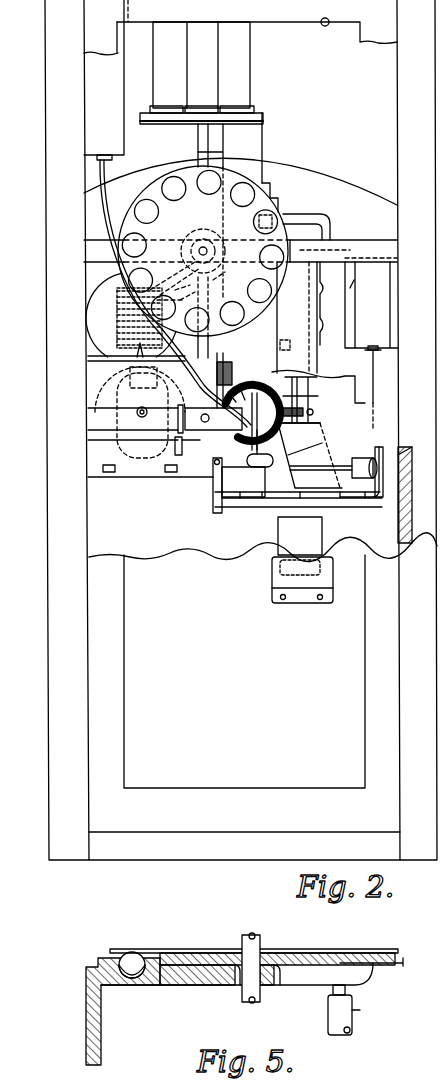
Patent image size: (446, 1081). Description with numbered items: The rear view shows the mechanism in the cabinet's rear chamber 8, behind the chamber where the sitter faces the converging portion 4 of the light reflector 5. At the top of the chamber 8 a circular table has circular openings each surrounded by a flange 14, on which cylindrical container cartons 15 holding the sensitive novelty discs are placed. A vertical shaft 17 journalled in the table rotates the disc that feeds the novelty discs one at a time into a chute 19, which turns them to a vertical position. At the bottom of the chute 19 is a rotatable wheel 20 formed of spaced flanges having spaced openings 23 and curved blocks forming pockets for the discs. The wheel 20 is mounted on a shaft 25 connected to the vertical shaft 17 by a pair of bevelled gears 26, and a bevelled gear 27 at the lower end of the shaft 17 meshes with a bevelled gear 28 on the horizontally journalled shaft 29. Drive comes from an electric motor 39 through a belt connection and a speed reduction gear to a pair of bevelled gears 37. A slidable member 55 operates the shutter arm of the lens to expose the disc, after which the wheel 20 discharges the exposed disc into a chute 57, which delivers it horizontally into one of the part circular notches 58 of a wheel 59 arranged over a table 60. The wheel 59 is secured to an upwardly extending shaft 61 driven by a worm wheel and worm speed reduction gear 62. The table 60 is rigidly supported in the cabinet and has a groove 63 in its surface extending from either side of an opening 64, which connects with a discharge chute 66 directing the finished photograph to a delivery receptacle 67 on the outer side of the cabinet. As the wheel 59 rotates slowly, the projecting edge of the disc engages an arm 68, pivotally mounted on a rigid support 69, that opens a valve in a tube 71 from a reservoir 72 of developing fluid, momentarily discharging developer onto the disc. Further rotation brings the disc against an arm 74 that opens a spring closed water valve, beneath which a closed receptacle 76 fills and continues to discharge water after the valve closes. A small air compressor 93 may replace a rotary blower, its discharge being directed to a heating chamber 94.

In FIG. 2, the converging portion 4 is at (353, 178).
In FIG. 2, the light reflector 5 is at (345, 107).
In FIG. 2, the chamber 8 is at (329, 21).
In FIG. 2, the flange 14 is at (237, 106).
In FIG. 2, the container cartons 15 is at (240, 60).
In FIG. 2, the vertical shaft 17 is at (203, 135).
In FIG. 2, the chute 19 is at (257, 145).
In FIG. 2, the rotatable wheel 20 is at (163, 187).
In FIG. 2, the spaced openings 23 is at (140, 207).
In FIG. 2, the shaft 25 is at (207, 251).
In FIG. 2, the bevelled gears 26 is at (187, 281).
In FIG. 2, the bevelled gear 27 is at (209, 418).
In FIG. 2, the bevelled gear 28 is at (215, 463).
In FIG. 2, the shaft 29 is at (215, 433).
In FIG. 2, the bevelled gears 37 is at (253, 407).
In FIG. 2, the electric motor 39 is at (103, 322).
In FIG. 2, the slidable member 55 is at (270, 188).
In FIG. 2, the chute 57 is at (318, 332).
In FIG. 2, the part circular notches 58 is at (337, 503).
In FIG. 2, the wheel 59 is at (270, 507).
In FIG. 5, the wheel 59 is at (203, 952).
In FIG. 2, the table 60 is at (237, 510).
In FIG. 5, the table 60 is at (213, 965).
In FIG. 5, the shaft 61 is at (258, 940).
In FIG. 2, the worm wheel and worm speed reduction gear 62 is at (313, 452).
In FIG. 5, the groove 63 is at (133, 972).
In FIG. 5, the opening 64 is at (385, 963).
In FIG. 2, the discharge chute 66 is at (312, 532).
In FIG. 2, the delivery receptacle 67 is at (277, 580).
In FIG. 2, the arm 68 is at (420, 443).
In FIG. 2, the rigid support 69 is at (365, 450).
In FIG. 2, the tube 71 is at (378, 388).
In FIG. 2, the reservoir 72 is at (371, 305).
In FIG. 2, the arm 74 is at (213, 507).
In FIG. 2, the closed receptacle 76 is at (258, 483).
In FIG. 2, the air compressor 93 is at (82, 367).
In FIG. 2, the heating chamber 94 is at (318, 279).